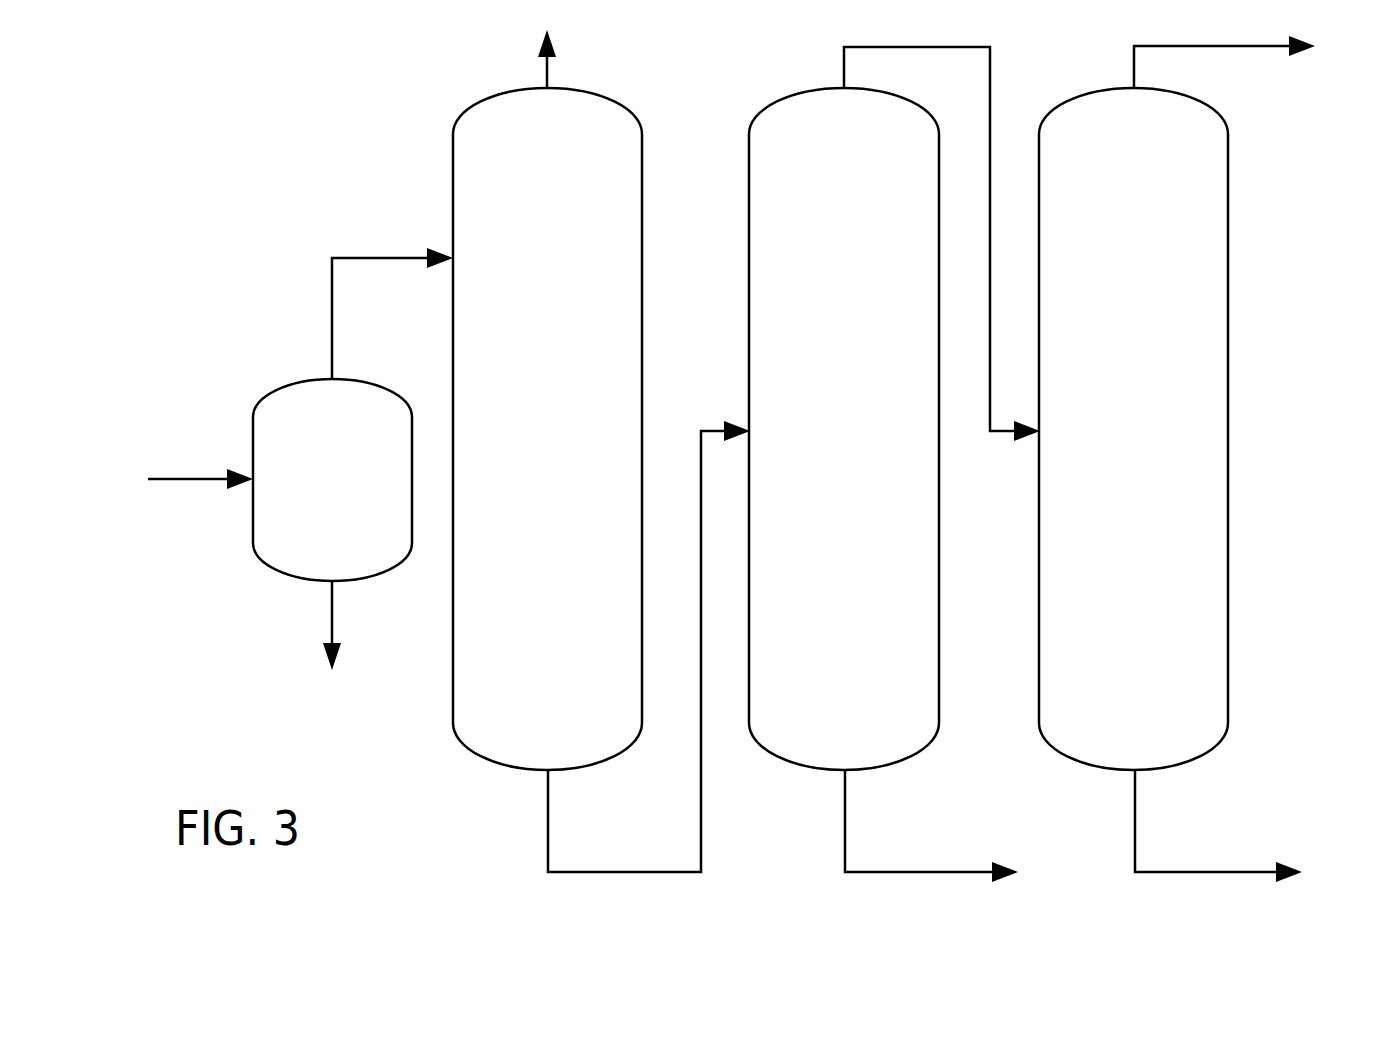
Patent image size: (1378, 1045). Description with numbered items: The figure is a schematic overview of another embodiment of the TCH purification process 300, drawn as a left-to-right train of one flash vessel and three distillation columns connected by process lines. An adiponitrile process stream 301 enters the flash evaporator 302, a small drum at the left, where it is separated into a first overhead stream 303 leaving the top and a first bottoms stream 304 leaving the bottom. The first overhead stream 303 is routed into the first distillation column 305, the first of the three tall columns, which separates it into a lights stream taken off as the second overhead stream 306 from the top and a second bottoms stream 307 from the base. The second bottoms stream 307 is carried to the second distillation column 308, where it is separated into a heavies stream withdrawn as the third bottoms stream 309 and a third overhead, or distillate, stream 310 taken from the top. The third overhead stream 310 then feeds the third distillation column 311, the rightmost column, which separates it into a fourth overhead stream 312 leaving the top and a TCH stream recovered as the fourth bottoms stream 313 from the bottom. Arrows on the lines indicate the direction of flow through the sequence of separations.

The TCH purification process 300 is at (286, 120).
The adiponitrile process stream 301 is at (170, 478).
The flash evaporator 302 is at (253, 550).
The first overhead stream 303 is at (343, 258).
The first bottoms stream 304 is at (330, 612).
The first distillation column 305 is at (453, 157).
The second overhead stream 306 is at (547, 70).
The second bottoms stream 307 is at (548, 818).
The second distillation column 308 is at (749, 193).
The third bottoms stream 309 is at (845, 832).
The third overhead stream 310 is at (844, 68).
The third distillation column 311 is at (1228, 279).
The fourth overhead stream 312 is at (1243, 46).
The fourth bottoms stream 313 is at (1188, 873).